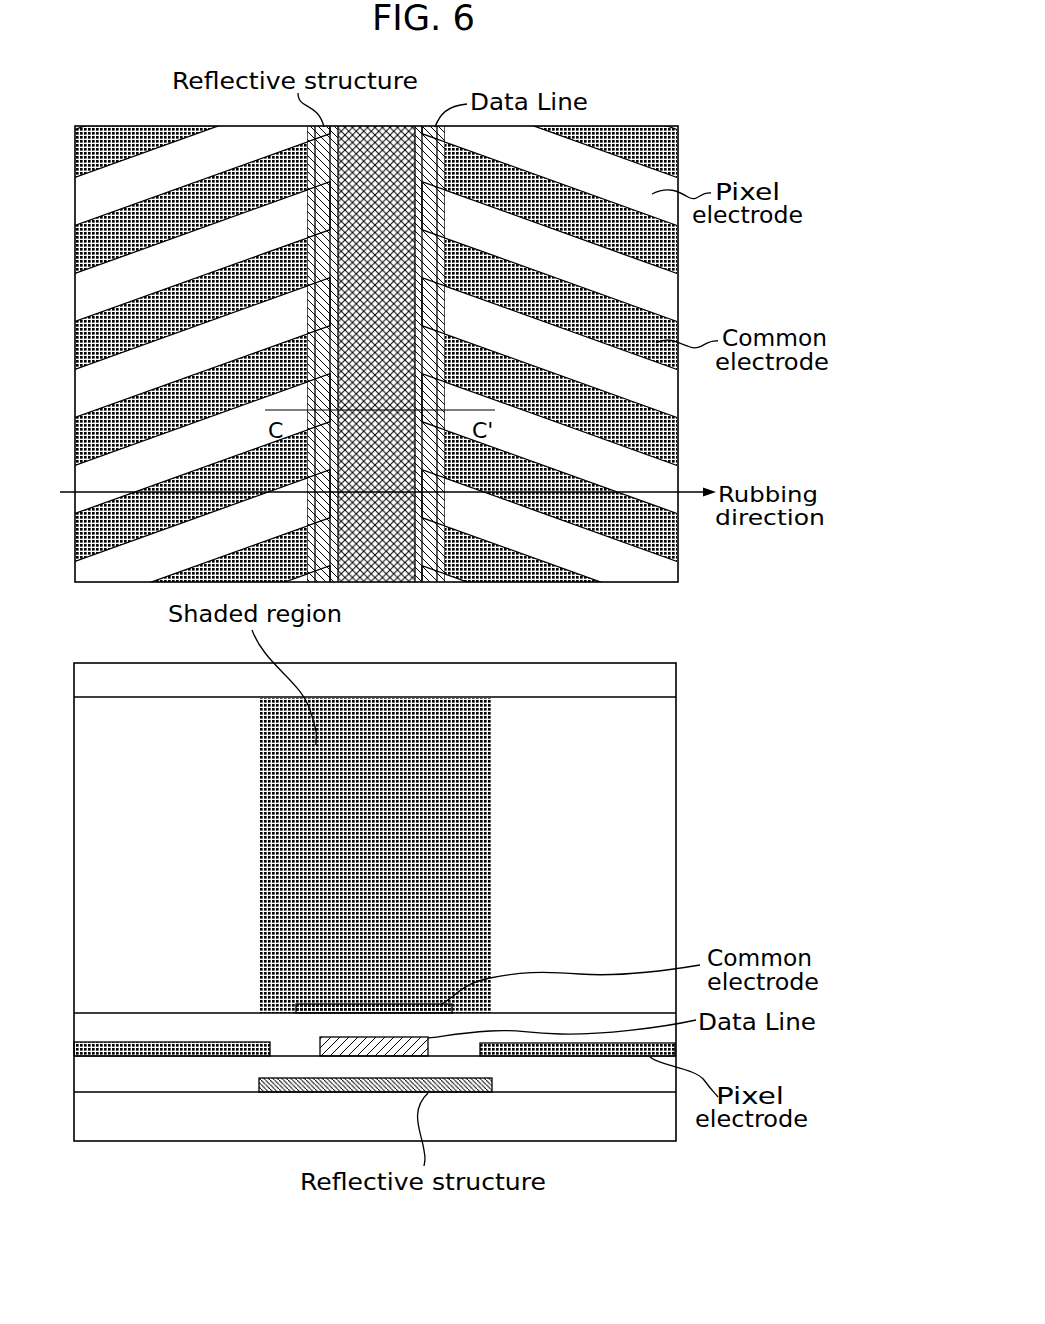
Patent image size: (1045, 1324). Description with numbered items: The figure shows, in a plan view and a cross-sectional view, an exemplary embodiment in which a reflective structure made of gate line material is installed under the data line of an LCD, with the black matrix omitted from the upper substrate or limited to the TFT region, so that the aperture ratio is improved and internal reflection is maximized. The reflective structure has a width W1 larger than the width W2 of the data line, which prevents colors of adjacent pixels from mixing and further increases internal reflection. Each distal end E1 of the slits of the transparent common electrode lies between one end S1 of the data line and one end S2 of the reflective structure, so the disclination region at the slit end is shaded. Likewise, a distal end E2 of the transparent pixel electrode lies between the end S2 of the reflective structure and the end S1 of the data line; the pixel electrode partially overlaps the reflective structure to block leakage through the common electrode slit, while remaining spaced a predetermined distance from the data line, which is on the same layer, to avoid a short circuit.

The distal end of the slits of the transparent common electrode E1 is at (283, 989).
The distal end of the transparent pixel electrode E2 is at (247, 1030).
The end of the data line S1 is at (309, 1069).
The end of the reflective structure S2 is at (236, 1075).
The width of the reflective structure W1 is at (481, 1106).
The width of the data line W2 is at (417, 1023).